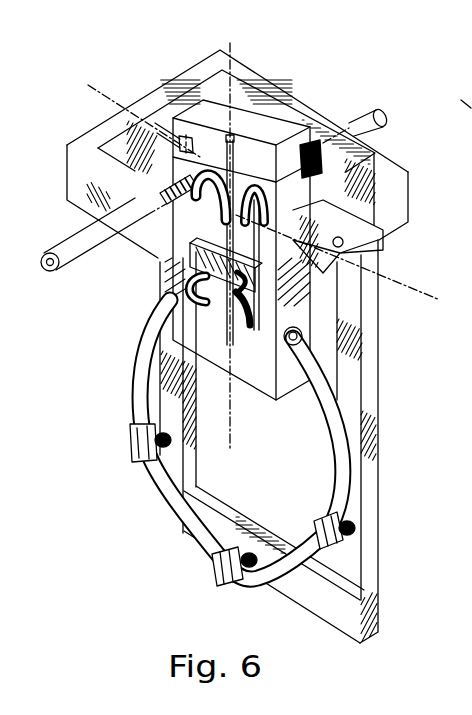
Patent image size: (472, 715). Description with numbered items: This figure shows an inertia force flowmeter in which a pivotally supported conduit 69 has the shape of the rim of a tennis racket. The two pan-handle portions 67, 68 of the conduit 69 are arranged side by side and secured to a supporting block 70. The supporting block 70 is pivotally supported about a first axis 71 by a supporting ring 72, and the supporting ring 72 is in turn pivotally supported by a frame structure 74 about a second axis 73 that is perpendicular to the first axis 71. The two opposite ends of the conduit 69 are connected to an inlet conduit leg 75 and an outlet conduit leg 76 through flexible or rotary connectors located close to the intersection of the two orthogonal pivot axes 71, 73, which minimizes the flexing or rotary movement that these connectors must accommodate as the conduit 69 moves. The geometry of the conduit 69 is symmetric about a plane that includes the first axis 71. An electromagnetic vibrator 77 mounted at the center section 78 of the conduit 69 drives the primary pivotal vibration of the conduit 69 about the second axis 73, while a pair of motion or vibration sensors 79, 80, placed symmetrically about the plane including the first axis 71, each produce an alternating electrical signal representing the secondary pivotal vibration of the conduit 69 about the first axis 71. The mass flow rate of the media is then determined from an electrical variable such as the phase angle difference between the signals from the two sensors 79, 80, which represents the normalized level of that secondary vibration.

The pan-handle portion 67 is at (190, 242).
The pan-handle portion 68 is at (240, 287).
The conduit 69 is at (178, 543).
The supporting block 70 is at (187, 268).
The first axis 71 is at (234, 43).
The supporting ring 72 is at (213, 127).
The second axis 73 is at (103, 96).
The frame structure 74 is at (83, 131).
The inlet conduit leg 75 is at (68, 272).
The outlet conduit leg 76 is at (369, 108).
The electromagnetic vibrator 77 is at (237, 517).
The center section 78 is at (220, 585).
The motion or vibration sensor 79 is at (168, 458).
The motion or vibration sensor 80 is at (345, 550).